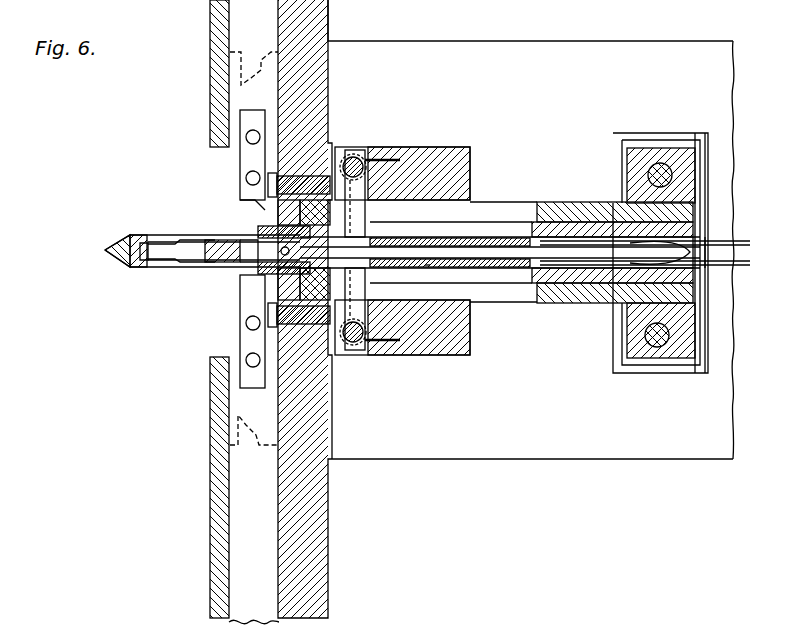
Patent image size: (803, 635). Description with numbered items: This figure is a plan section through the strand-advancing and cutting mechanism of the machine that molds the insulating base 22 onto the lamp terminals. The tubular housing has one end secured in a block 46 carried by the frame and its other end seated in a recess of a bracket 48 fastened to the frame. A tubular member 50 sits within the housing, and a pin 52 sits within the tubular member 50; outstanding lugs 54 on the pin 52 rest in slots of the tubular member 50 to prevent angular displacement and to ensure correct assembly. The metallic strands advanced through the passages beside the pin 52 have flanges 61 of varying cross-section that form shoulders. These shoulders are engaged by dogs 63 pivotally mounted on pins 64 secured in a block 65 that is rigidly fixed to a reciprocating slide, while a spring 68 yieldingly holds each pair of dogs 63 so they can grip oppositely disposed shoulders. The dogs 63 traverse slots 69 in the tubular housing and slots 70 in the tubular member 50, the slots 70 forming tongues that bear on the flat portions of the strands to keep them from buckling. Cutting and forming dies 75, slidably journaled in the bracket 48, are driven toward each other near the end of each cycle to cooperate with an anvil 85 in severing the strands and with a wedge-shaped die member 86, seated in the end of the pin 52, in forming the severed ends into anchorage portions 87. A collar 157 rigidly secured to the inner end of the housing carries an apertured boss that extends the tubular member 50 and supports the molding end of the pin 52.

The base 22 is at (113, 243).
The block 46 is at (627, 343).
The bracket 48 is at (315, 530).
The tubular member 50 is at (580, 208).
The pin 52 is at (615, 250).
The outstanding lugs 54 is at (270, 232).
The flanges 61 is at (415, 265).
The dogs 63 is at (365, 215).
The pins 64 is at (353, 157).
The block 65 is at (425, 268).
The spring 68 is at (390, 355).
The slots 69 is at (498, 214).
The slots 70 is at (458, 232).
The cutting and forming dies 75 is at (240, 207).
The anvil 85 is at (215, 244).
The wedge-shaped die member 86 is at (240, 252).
The anchorage portions 87 is at (140, 236).
The collar 157 is at (258, 200).